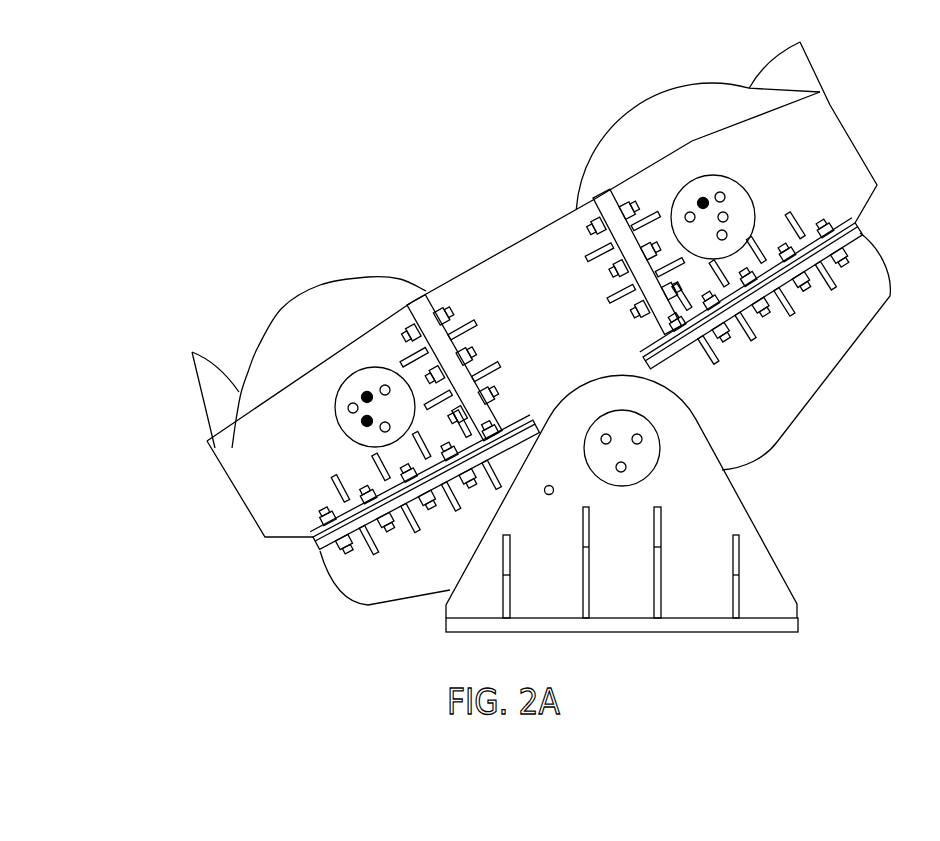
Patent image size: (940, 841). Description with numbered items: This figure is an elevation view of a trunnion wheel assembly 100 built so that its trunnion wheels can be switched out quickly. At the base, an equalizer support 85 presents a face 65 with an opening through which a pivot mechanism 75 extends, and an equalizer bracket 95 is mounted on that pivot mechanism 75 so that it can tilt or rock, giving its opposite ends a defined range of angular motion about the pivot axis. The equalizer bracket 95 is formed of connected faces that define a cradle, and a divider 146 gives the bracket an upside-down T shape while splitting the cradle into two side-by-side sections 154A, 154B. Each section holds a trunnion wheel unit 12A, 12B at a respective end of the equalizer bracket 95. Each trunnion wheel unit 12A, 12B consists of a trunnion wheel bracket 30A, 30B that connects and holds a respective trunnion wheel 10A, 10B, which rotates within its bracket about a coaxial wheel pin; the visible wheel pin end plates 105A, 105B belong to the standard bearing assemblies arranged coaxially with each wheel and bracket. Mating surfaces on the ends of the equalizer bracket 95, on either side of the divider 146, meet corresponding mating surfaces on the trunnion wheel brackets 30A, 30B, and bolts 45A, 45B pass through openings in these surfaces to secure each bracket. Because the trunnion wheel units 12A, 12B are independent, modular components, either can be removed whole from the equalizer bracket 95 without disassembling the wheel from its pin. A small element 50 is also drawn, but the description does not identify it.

The trunnion wheel assembly 100 is at (142, 153).
The trunnion wheel 10A is at (279, 298).
The trunnion wheel 10B is at (687, 72).
The trunnion wheel unit 12A is at (349, 407).
The trunnion wheel unit 12B is at (722, 193).
The trunnion wheel bracket 30A is at (200, 434).
The trunnion wheel bracket 30B is at (856, 122).
The wheel pin end plate 105A is at (338, 430).
The wheel pin end plate 105B is at (756, 208).
The bolt 45A is at (340, 553).
The bolt 45B is at (853, 262).
The section 154A is at (372, 525).
The section 154B is at (821, 266).
The divider 146 is at (566, 338).
The equalizer bracket 95 is at (838, 379).
The pivot mechanism 75 is at (642, 466).
The equalizer support 85 is at (795, 571).
The face 65 is at (708, 574).
The pin 50 is at (532, 496).